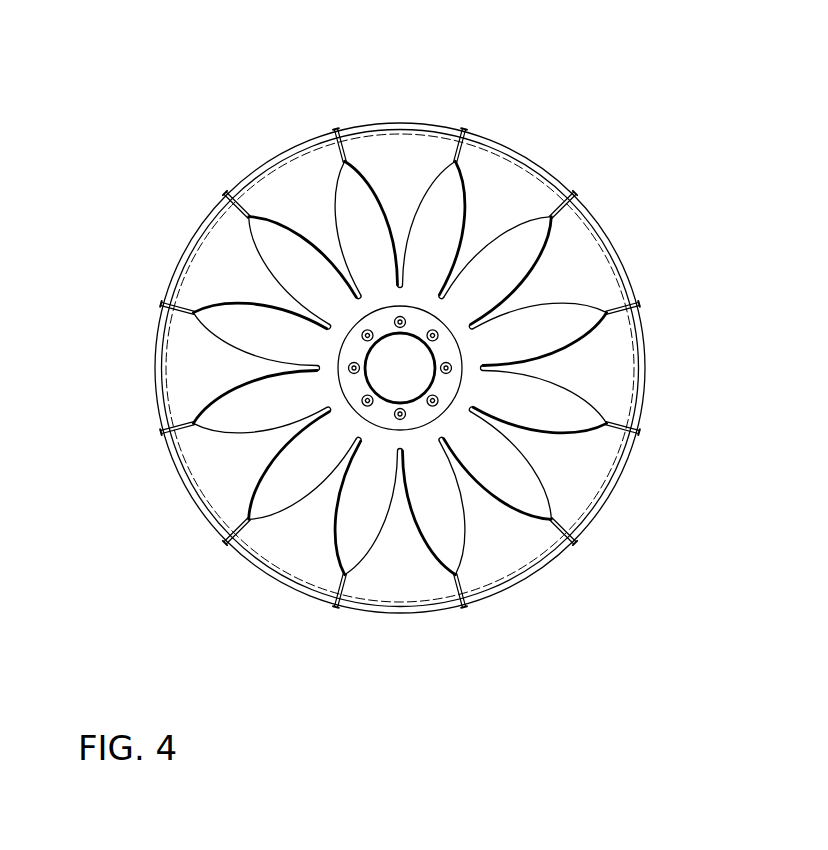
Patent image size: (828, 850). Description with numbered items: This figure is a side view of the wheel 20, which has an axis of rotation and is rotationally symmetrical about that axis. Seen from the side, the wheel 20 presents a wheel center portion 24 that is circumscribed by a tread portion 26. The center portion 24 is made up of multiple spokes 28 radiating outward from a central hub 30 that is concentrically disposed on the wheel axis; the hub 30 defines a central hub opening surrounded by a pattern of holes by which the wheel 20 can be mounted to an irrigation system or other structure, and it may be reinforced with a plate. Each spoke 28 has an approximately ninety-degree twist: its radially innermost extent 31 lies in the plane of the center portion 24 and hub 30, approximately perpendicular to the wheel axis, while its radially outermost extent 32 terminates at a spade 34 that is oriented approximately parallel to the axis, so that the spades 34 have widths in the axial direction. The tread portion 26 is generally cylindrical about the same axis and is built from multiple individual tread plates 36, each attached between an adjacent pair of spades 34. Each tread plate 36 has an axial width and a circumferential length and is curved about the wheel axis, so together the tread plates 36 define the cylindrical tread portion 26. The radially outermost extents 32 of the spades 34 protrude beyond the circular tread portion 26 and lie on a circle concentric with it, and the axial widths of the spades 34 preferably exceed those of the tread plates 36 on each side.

The wheel 20 is at (510, 83).
The wheel center portion 24 is at (468, 195).
The tread portion 26 is at (571, 185).
The spoke 28 is at (268, 405).
The central hub 30 is at (408, 432).
The radially innermost extent 31 is at (480, 396).
The radially outermost extent 32 is at (247, 522).
The spade 34 is at (161, 304).
The tread plate 36 is at (298, 153).